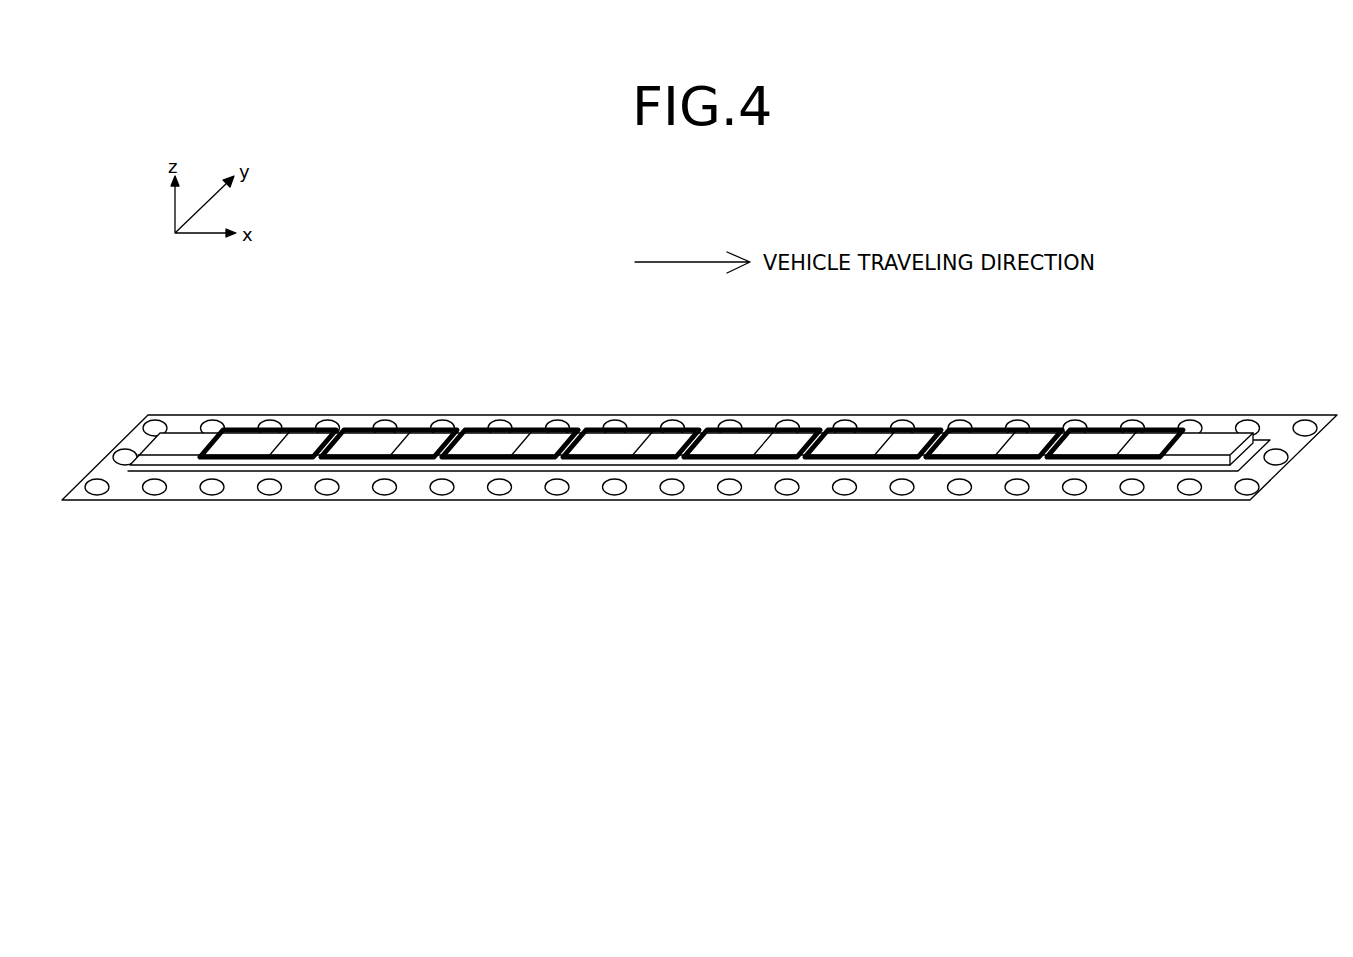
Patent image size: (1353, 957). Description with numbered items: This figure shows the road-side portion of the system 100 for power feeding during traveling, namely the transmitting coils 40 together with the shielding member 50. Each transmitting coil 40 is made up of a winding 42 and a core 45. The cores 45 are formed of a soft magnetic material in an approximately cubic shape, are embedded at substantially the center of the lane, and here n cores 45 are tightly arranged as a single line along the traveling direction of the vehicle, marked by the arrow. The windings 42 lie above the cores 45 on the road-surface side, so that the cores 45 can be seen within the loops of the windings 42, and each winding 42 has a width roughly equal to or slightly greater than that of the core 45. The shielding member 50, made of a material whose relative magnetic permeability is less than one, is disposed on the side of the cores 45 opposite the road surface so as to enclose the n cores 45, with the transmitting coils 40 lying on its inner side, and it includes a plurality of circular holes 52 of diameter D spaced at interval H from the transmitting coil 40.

The system for power feeding during traveling 100 is at (1229, 323).
The transmitting coil 40 is at (490, 362).
The winding 42 is at (321, 433).
The core 45 is at (269, 437).
The shielding member 50 is at (167, 414).
The hole 52 is at (615, 495).